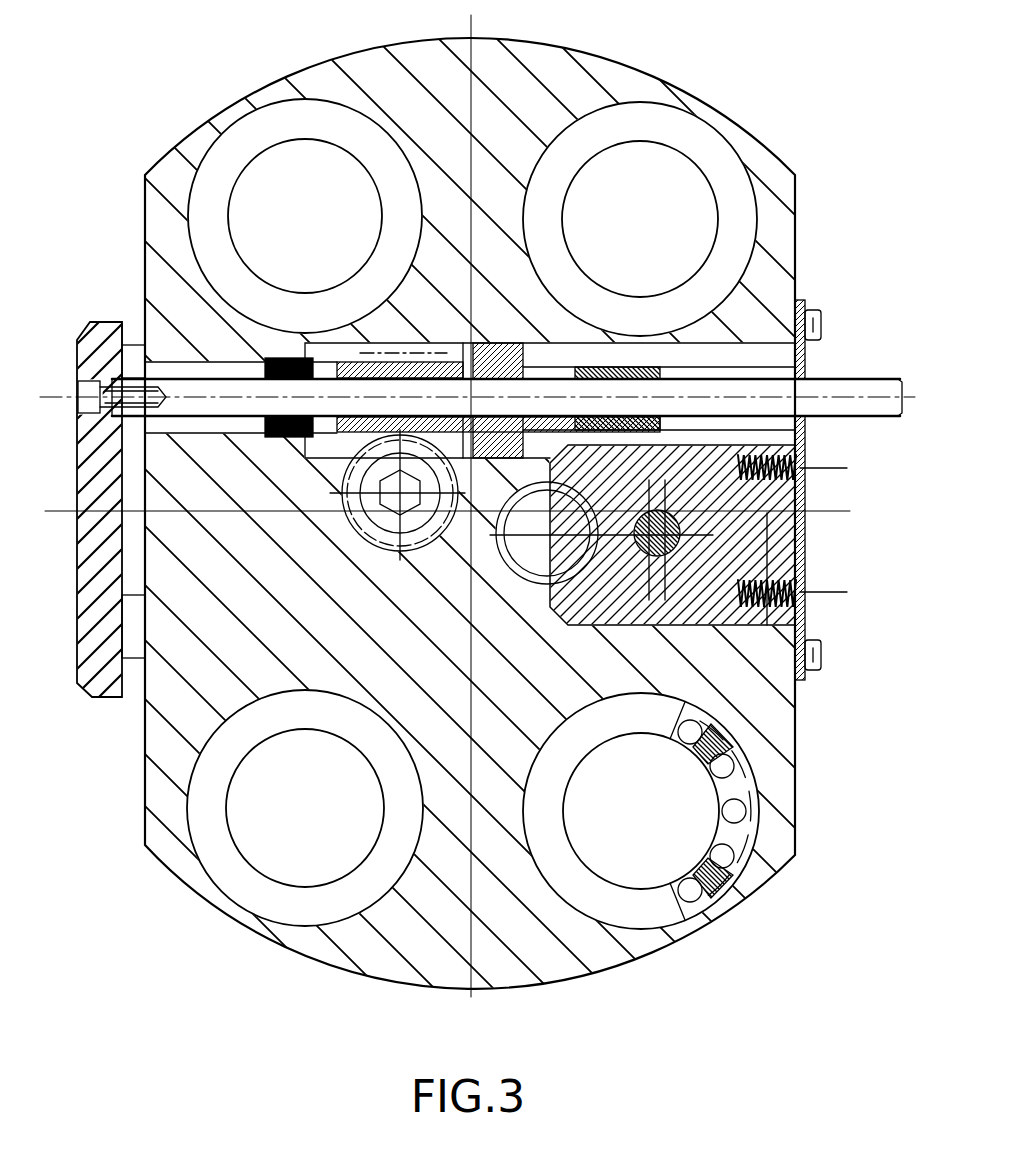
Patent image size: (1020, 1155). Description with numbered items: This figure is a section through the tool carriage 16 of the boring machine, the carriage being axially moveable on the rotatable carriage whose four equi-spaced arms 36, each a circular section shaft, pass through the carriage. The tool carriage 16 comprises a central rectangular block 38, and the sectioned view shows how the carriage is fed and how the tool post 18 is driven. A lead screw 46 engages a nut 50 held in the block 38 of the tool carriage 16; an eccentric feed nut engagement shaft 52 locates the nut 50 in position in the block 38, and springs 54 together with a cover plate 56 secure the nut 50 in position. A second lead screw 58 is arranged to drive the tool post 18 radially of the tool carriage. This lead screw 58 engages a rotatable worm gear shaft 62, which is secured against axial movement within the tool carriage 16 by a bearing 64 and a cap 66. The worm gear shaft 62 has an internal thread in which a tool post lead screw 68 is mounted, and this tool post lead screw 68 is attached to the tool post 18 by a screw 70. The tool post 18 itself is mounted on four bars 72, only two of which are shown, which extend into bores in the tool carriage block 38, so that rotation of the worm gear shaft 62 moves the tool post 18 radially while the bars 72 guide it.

The tool carriage 16 is at (695, 92).
The tool post 18 is at (88, 338).
The arms 36 is at (628, 870).
The central rectangular block 38 is at (384, 962).
The lead screw 46 is at (565, 555).
The nut 50 is at (797, 708).
The eccentric feed nut engagement shaft 52 is at (662, 548).
The springs 54 is at (773, 485).
The cover plate 56 is at (803, 620).
The lead screw 58 is at (384, 522).
The rotatable worm gear shaft 62 is at (648, 366).
The bearing 64 is at (286, 370).
The cap 66 is at (487, 352).
The tool post lead screw 68 is at (136, 352).
The screw 70 is at (86, 397).
The bars 72 is at (138, 342).